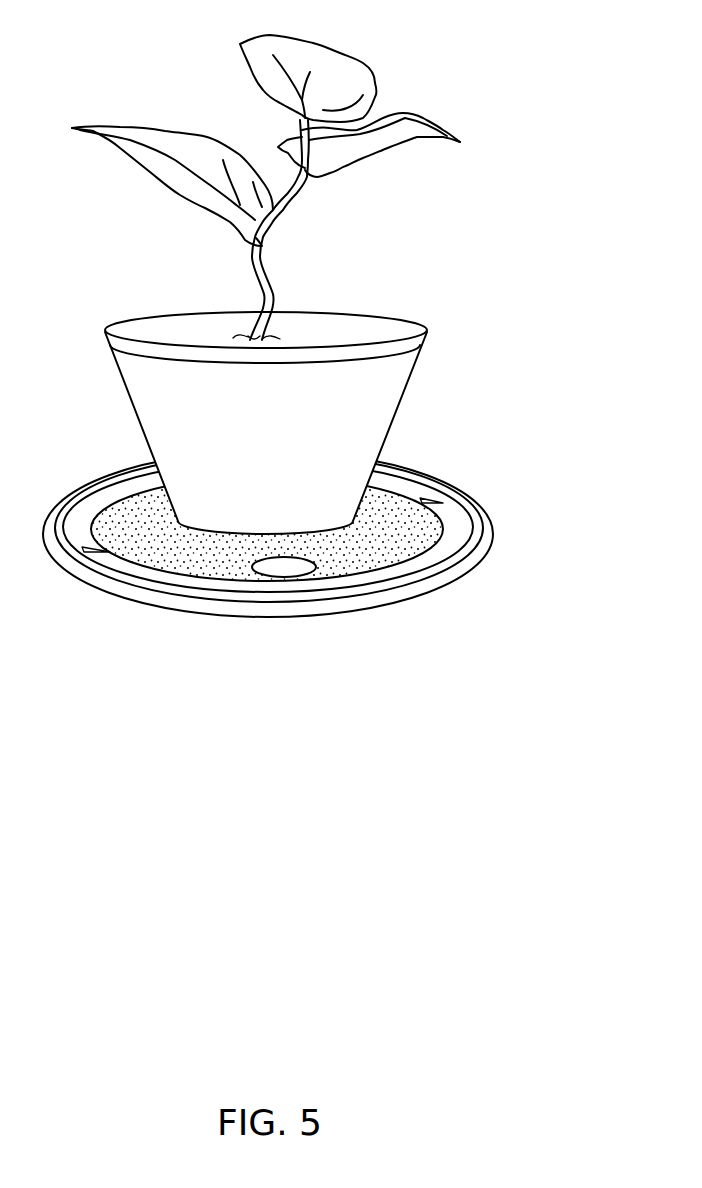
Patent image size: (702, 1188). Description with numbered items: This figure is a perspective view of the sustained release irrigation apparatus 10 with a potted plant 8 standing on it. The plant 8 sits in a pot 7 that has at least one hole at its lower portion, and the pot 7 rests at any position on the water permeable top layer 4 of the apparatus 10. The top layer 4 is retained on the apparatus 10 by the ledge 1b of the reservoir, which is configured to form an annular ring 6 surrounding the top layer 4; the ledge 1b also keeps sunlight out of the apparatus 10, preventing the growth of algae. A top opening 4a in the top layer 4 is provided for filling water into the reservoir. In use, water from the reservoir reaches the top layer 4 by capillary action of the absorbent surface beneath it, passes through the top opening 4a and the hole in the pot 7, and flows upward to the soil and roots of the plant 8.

The ledge 1b is at (467, 573).
The annular ring 6 is at (457, 527).
The water permeable top layer 4 is at (390, 502).
The top opening 4a is at (318, 568).
The pot 7 is at (418, 358).
The potted plant 8 is at (413, 112).
The sustained release irrigation apparatus 10 is at (489, 485).